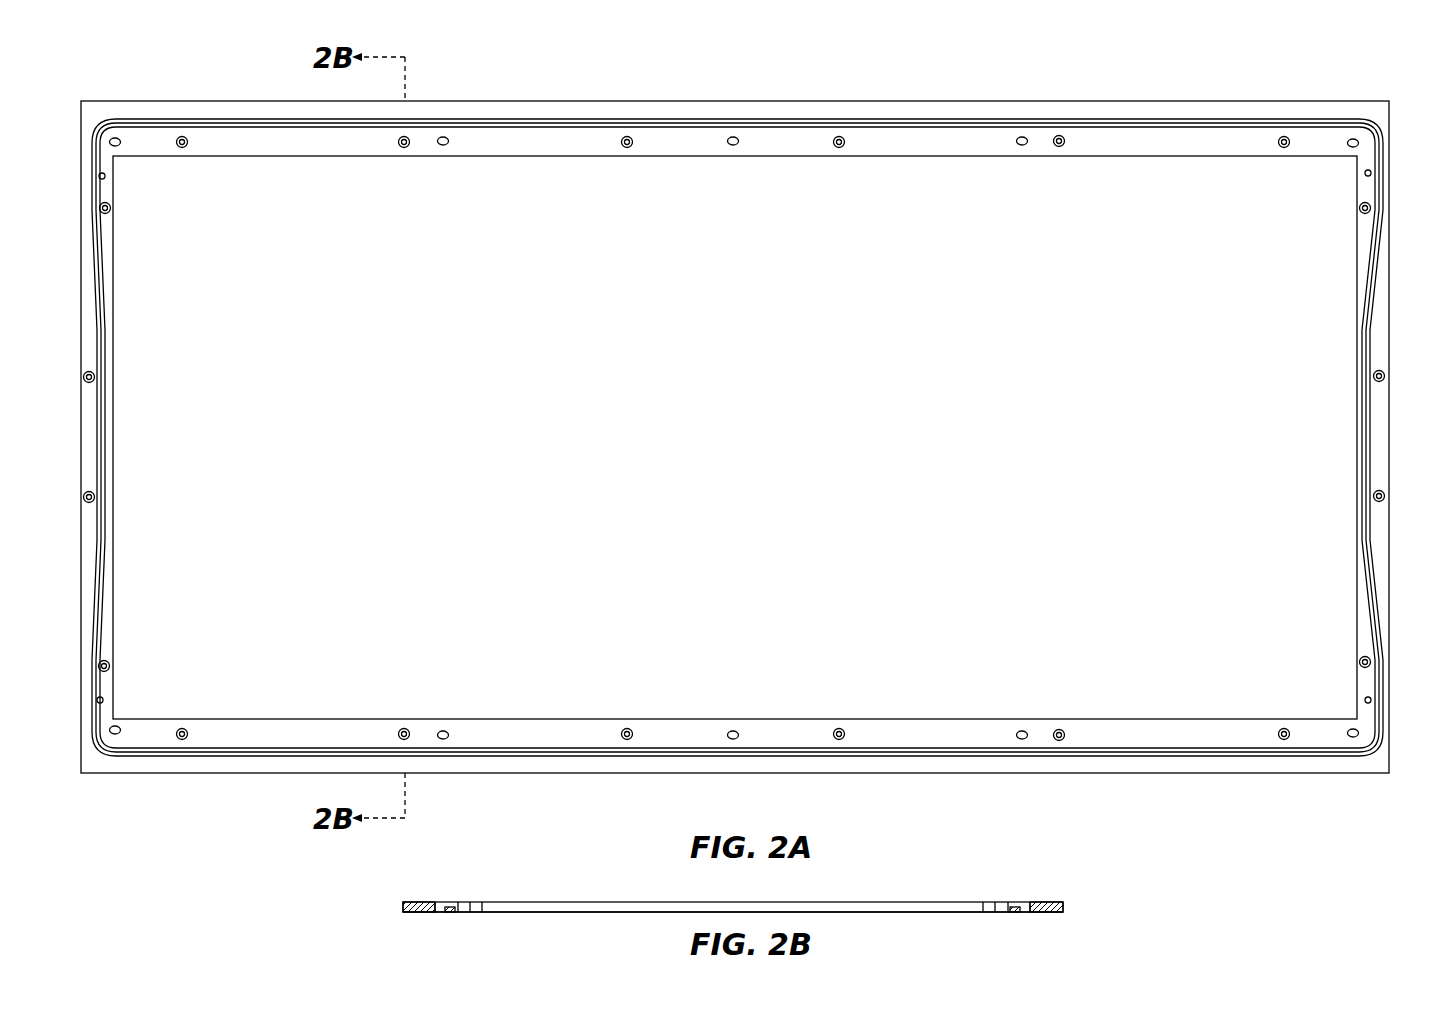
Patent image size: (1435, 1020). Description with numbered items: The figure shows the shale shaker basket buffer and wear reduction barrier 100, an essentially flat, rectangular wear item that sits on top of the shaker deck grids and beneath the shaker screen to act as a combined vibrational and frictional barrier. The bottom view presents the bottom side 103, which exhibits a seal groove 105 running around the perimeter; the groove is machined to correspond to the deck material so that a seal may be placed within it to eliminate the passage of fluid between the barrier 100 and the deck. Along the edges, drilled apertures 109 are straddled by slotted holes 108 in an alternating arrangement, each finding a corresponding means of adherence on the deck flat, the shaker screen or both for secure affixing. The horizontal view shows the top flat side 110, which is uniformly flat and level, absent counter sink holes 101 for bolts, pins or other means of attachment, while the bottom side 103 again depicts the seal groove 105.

In FIG. 2A, the shale shaker basket buffer and wear reduction barrier 100 is at (752, 450).
In FIG. 2B, the counter sink holes 101 is at (440, 914).
In FIG. 2A, the bottom side 103 is at (677, 108).
In FIG. 2B, the bottom side 103 is at (878, 901).
In FIG. 2A, the seal groove 105 is at (535, 119).
In FIG. 2B, the seal groove 105 is at (422, 901).
In FIG. 2A, the slotted holes 108 is at (115, 147).
In FIG. 2A, the drilled apertures 109 is at (110, 212).
In FIG. 2B, the top flat side 110 is at (912, 913).